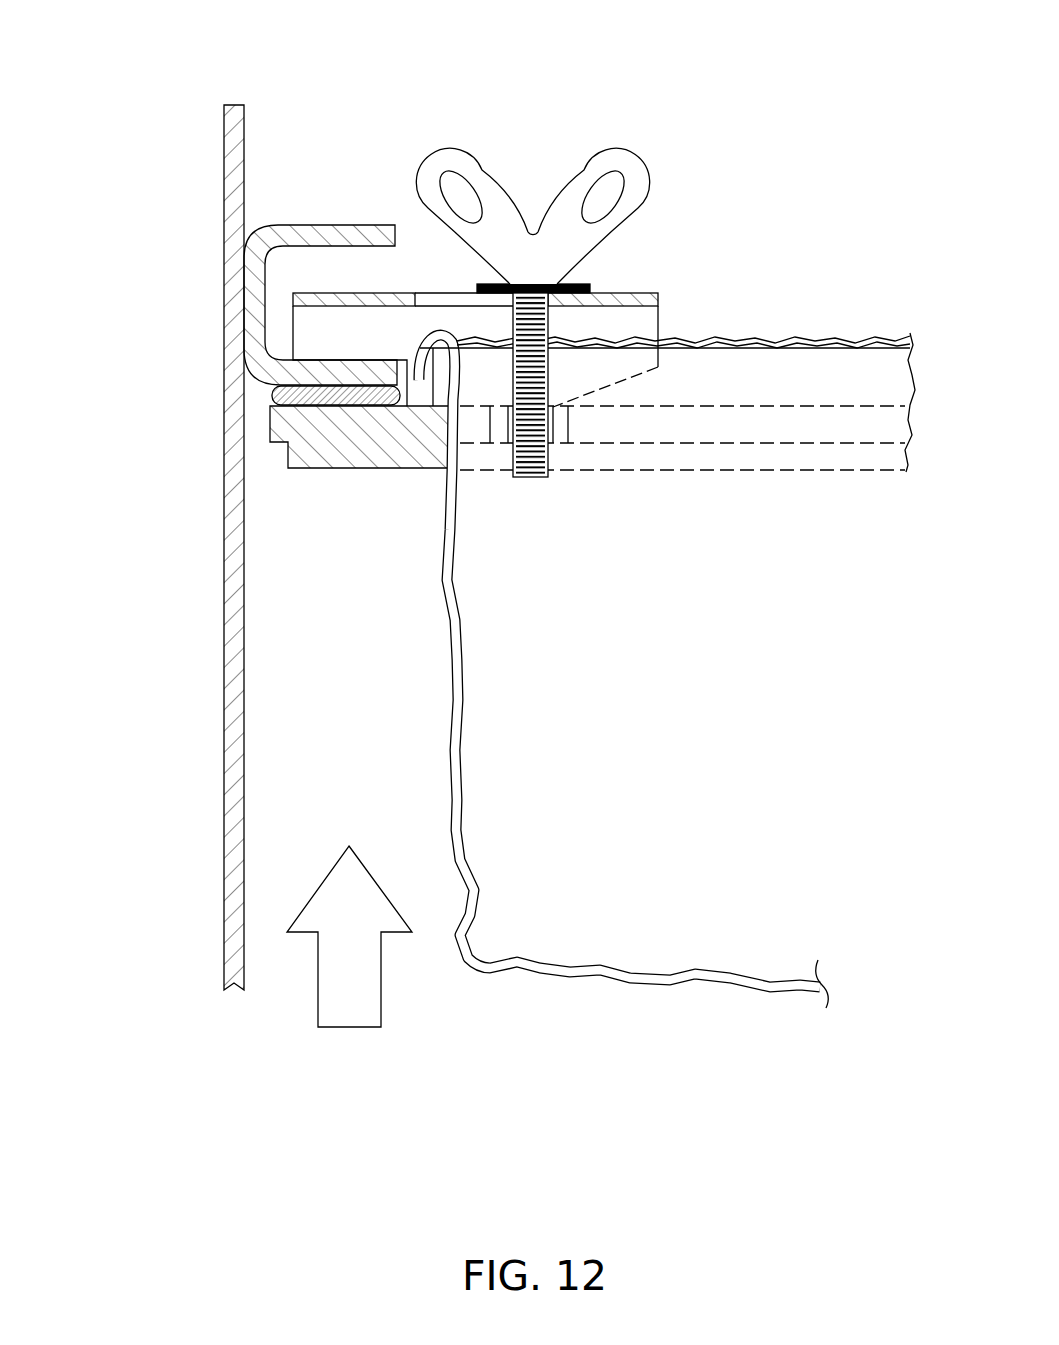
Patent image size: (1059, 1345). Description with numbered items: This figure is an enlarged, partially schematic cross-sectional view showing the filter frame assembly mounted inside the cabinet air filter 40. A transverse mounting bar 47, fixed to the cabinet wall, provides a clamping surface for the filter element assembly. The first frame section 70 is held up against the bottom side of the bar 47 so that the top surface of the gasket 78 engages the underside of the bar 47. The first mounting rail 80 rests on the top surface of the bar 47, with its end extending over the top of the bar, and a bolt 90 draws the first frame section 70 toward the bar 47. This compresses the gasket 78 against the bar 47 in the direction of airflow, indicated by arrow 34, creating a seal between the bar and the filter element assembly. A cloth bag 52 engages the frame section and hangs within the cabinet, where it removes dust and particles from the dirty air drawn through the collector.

The cabinet air filter 40 is at (223, 160).
The transverse mounting bar 47 is at (252, 373).
The first mounting rail 80 is at (383, 297).
The gasket 78 is at (270, 393).
The first frame section 70 is at (357, 475).
The cloth bag 52 is at (490, 735).
The bolt 90 is at (622, 150).
The arrow 34 is at (317, 988).